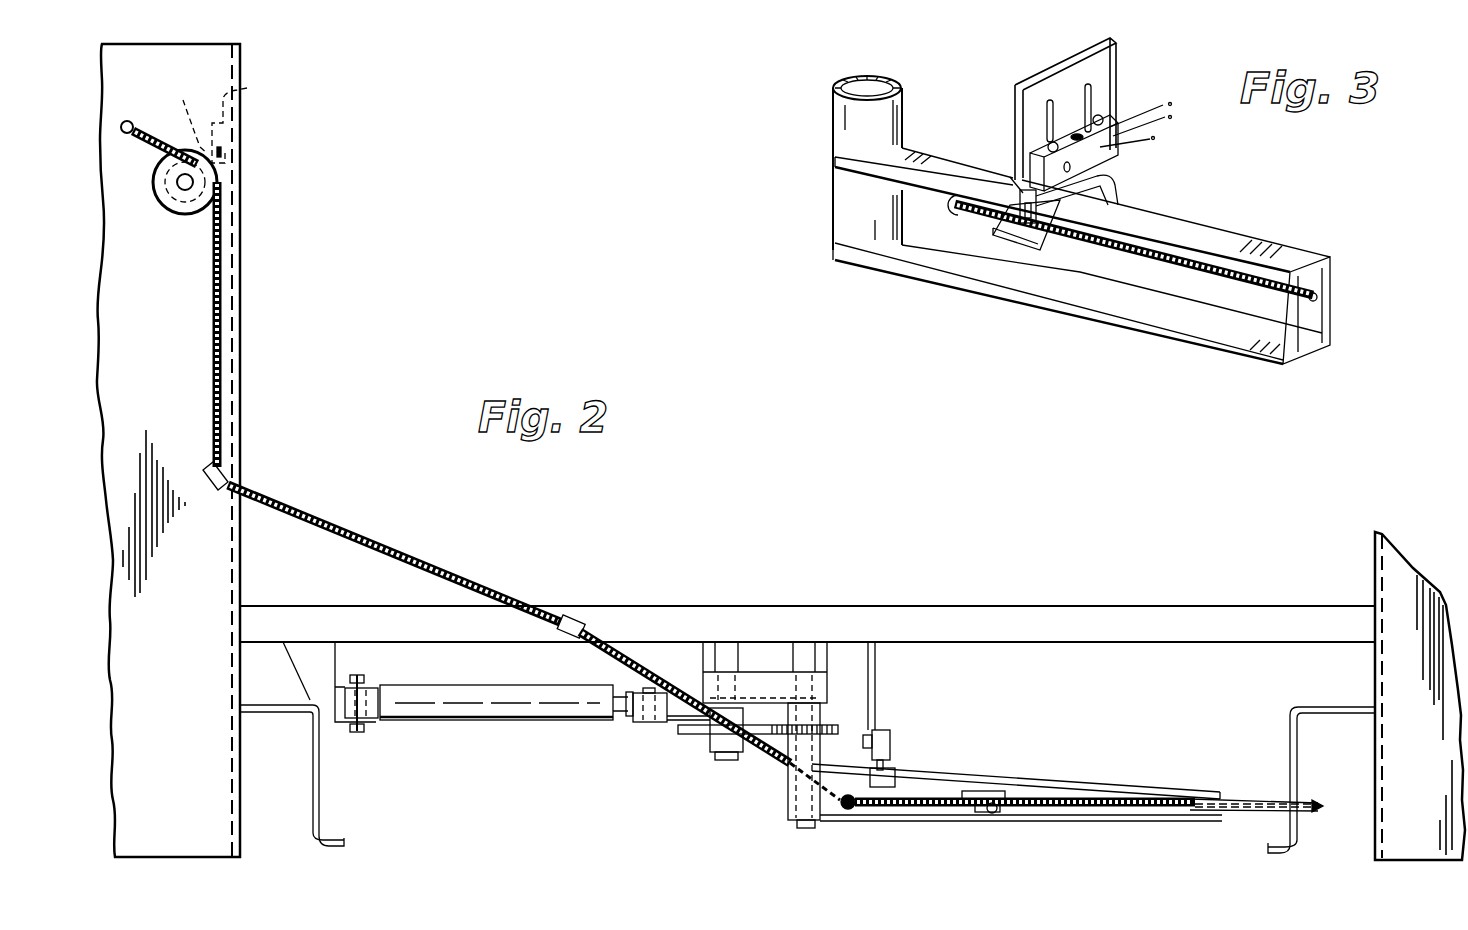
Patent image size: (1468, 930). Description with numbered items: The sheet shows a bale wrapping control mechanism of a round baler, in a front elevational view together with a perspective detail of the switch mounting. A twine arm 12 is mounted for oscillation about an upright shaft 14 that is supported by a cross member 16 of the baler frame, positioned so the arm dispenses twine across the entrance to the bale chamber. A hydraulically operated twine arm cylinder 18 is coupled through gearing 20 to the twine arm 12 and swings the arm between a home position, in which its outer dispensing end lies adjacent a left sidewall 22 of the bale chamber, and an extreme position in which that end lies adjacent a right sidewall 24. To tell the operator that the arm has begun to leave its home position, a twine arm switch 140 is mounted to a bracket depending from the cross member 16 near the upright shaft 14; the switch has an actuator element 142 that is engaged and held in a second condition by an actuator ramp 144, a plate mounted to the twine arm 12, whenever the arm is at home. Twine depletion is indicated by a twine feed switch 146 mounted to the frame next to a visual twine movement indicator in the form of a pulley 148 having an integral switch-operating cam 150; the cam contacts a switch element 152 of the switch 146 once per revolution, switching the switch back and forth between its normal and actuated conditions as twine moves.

In FIG. 2, the twine arm 12 is at (1025, 822).
In FIG. 3, the twine arm 12 is at (1247, 230).
In FIG. 2, the upright shaft 14 is at (798, 823).
In FIG. 2, the cross member 16 is at (990, 643).
In FIG. 2, the twine arm cylinder 18 is at (484, 722).
In FIG. 2, the gearing 20 is at (687, 737).
In FIG. 2, the left sidewall 22 is at (1375, 680).
In FIG. 2, the right sidewall 24 is at (240, 548).
In FIG. 2, the twine arm switch 140 is at (890, 738).
In FIG. 3, the twine arm switch 140 is at (1117, 173).
In FIG. 3, the actuator element 142 is at (1015, 183).
In FIG. 3, the actuator ramp 144 is at (1020, 232).
In FIG. 2, the twine feed switch 146 is at (247, 88).
In FIG. 2, the pulley 148 is at (223, 187).
In FIG. 2, the switch-operating cam 150 is at (162, 200).
In FIG. 2, the switch element 152 is at (174, 115).